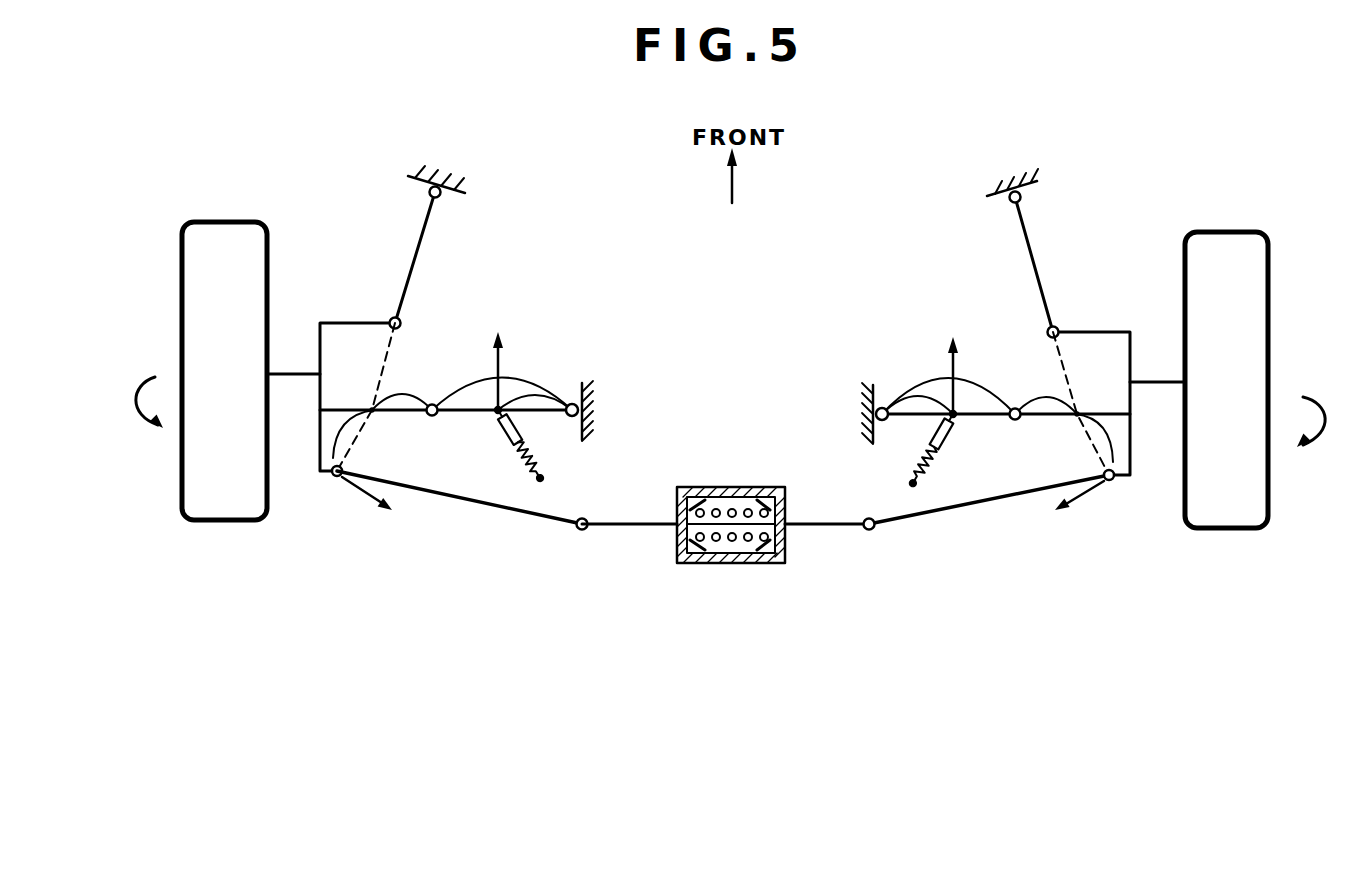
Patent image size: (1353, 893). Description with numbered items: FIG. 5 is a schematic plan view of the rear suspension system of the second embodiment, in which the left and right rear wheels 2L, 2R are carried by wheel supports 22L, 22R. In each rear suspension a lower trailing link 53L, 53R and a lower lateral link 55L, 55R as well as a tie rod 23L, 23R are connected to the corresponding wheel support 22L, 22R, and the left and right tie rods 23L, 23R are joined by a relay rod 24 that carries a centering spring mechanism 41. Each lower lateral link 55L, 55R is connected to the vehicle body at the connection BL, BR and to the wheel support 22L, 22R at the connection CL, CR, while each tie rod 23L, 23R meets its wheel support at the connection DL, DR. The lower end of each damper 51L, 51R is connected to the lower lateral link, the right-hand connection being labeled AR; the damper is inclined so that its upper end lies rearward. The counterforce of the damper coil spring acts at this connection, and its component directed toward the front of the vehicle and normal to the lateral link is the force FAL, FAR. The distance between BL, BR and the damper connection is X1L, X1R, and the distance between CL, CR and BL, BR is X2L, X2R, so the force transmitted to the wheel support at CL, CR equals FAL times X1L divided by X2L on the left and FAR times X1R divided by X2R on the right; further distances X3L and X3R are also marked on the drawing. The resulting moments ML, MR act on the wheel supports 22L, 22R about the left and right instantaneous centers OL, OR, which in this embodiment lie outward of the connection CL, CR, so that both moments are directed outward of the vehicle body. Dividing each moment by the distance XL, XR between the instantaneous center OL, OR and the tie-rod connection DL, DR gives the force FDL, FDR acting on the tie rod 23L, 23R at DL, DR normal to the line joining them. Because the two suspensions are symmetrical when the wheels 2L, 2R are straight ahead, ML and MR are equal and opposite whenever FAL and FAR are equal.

The left rear wheel 2L is at (233, 505).
The right rear wheel 2R is at (1230, 512).
The wheel support 22L is at (320, 445).
The wheel support 22R is at (1130, 460).
The tie rod 23L is at (500, 510).
The tie rod 23R is at (947, 510).
The relay rod 24 is at (826, 530).
The centering spring mechanism 41 is at (731, 576).
The damper 51L is at (560, 483).
The damper 51R is at (882, 485).
The lower trailing link 53L is at (413, 247).
The lower trailing link 53R is at (1033, 246).
The lower lateral link 55L is at (547, 414).
The lower lateral link 55R is at (898, 432).
The moment ML is at (150, 388).
The moment MR is at (1310, 409).
The distance XL is at (302, 447).
The distance XR is at (1112, 452).
The distance X1L is at (527, 386).
The distance X2L is at (470, 383).
The left distance X3 X3L is at (395, 392).
The distance X1R is at (918, 395).
The distance X2R is at (975, 382).
The right distance X3 X3R is at (1055, 398).
The force FAL is at (492, 355).
The force FAR is at (950, 360).
The force FDL is at (393, 502).
The force FDR is at (1080, 497).
The left instantaneous center OL is at (373, 416).
The right instantaneous center OR is at (1077, 419).
The connection CL is at (433, 416).
The connection CR is at (1015, 420).
The connection BL is at (570, 400).
The connection BR is at (880, 405).
The connection DL is at (340, 480).
The connection DR is at (1108, 481).
The connection AR is at (955, 418).